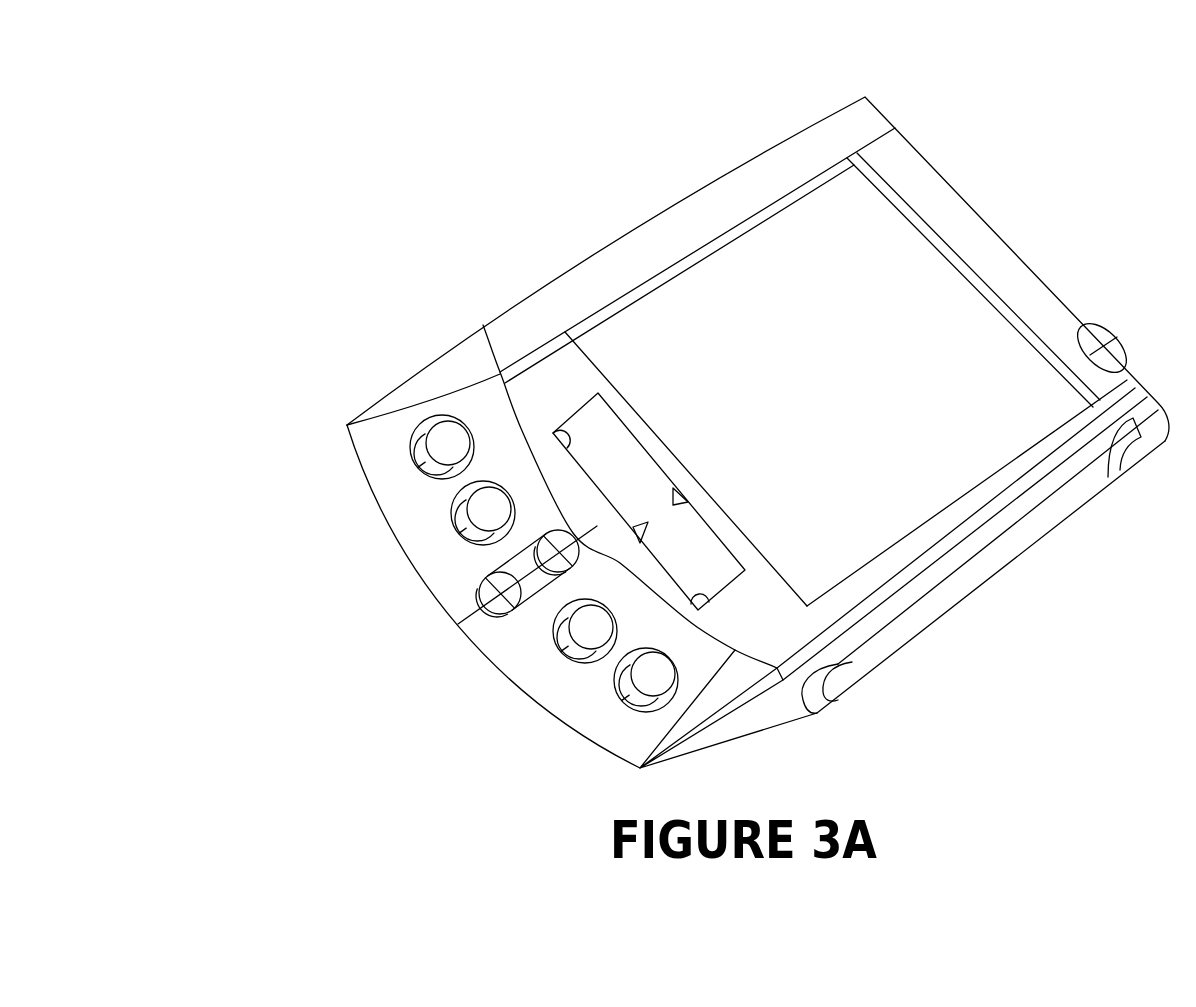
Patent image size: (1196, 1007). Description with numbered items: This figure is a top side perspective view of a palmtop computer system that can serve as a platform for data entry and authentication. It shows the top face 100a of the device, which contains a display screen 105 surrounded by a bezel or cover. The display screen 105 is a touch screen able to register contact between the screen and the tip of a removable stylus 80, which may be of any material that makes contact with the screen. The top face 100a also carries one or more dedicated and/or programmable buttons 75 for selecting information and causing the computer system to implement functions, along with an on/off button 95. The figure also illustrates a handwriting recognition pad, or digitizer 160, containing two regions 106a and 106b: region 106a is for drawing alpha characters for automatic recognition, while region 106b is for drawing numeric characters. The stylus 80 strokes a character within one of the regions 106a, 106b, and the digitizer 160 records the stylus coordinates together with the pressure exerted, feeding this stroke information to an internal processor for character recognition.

The top face 100a is at (210, 69).
The display screen 105 is at (856, 257).
The on/off button 95 is at (1100, 323).
The stylus 80 is at (958, 588).
The buttons 75 is at (460, 435).
The digitizer 160 is at (574, 415).
The region for alpha characters 106a is at (623, 451).
The region for numeric characters 106b is at (728, 577).